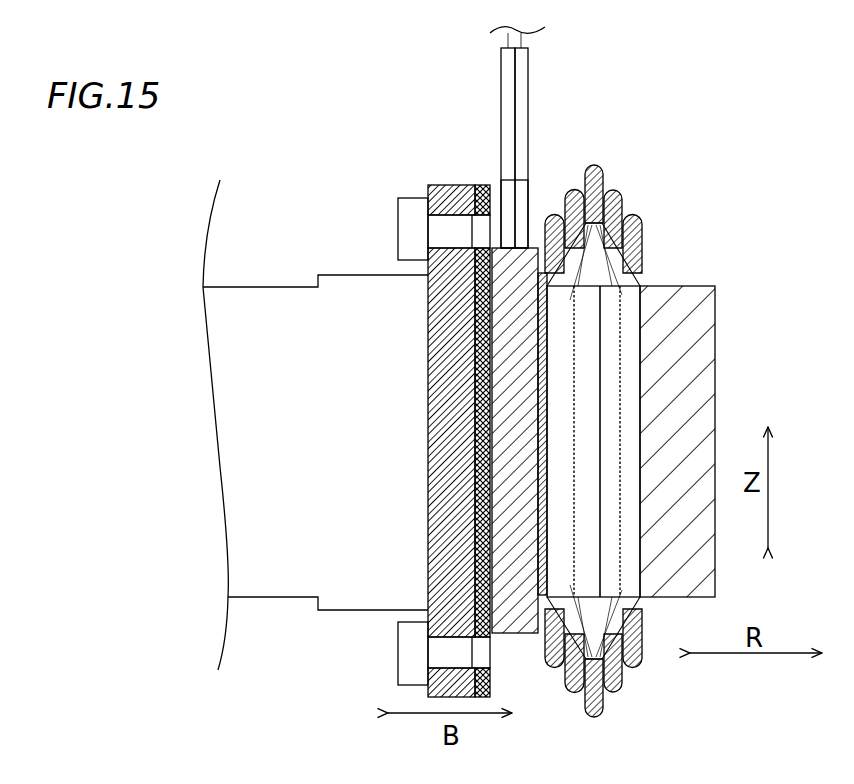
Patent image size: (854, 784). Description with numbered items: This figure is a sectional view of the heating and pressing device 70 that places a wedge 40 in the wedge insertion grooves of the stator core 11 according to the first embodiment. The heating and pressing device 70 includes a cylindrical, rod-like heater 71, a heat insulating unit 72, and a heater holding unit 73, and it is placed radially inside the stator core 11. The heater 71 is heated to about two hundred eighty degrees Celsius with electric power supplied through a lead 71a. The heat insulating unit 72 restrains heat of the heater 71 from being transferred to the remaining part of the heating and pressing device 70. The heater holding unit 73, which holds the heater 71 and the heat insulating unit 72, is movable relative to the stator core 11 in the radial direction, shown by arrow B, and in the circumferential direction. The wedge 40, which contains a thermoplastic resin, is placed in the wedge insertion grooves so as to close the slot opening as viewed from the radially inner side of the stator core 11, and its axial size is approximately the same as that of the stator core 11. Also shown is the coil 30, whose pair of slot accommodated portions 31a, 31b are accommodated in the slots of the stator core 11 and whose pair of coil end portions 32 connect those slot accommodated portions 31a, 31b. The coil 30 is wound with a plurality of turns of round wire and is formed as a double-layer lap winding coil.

The heating and pressing device 70 is at (288, 198).
The heater holding unit 73 is at (428, 310).
The heat insulating unit 72 is at (480, 185).
The heater 71 is at (500, 215).
The lead 71a is at (523, 103).
The wedge 40 is at (540, 283).
The coil 30 is at (683, 410).
The stator core portion 31a is at (630, 337).
The stator core portion 31b is at (641, 243).
The coil end portions 32 is at (605, 168).
The stator core 11 is at (670, 340).